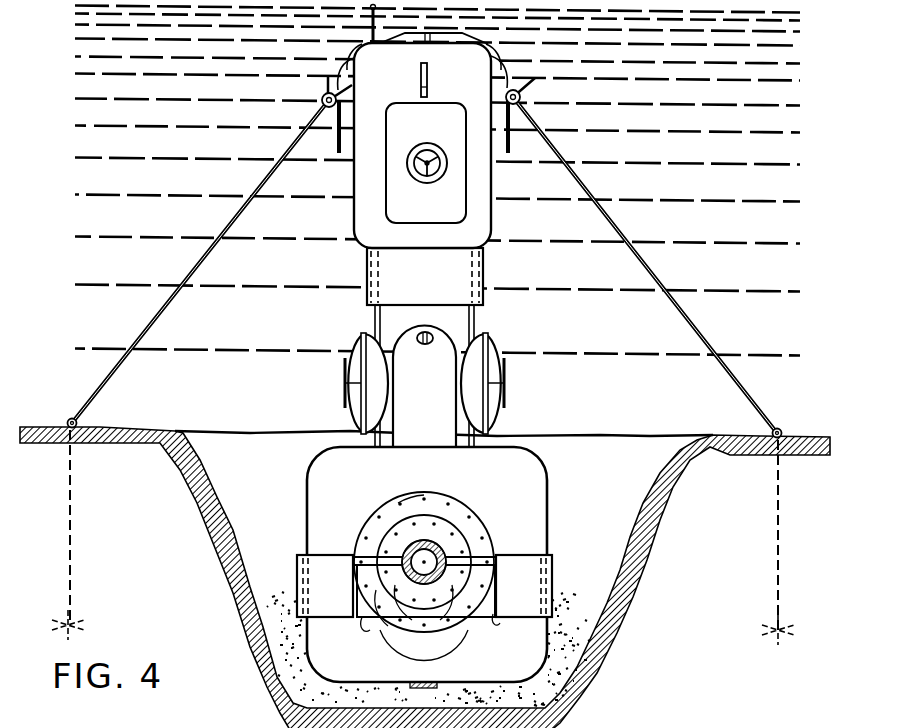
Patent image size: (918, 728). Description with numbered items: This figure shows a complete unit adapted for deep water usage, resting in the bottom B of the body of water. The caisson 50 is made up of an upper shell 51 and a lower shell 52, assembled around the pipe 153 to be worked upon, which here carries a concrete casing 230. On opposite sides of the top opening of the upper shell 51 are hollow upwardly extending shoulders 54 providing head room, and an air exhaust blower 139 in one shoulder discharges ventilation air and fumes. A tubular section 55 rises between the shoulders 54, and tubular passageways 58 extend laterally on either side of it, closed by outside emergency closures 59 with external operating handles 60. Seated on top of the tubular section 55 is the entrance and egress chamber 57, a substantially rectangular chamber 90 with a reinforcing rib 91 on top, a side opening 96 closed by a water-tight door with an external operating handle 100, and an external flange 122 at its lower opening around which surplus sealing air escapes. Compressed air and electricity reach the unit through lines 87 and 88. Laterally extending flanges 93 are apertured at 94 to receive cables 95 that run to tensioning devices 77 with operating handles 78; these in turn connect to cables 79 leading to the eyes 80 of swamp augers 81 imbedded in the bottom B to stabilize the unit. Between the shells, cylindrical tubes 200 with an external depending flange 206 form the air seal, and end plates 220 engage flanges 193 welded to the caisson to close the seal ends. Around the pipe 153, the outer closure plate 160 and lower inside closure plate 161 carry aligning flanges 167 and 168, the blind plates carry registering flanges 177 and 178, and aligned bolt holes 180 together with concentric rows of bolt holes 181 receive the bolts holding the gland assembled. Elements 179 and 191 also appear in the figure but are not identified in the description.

The caisson 50 is at (418, 564).
The upper shell 51 is at (307, 498).
The lower shell 52 is at (311, 640).
The hollow upwardly extending shoulders 54 is at (453, 373).
The tubular section 55 is at (375, 316).
The entrance and egress chamber 57 is at (421, 127).
The tubular passageways 58 is at (426, 373).
The outside emergency closures 59 is at (360, 350).
The external operating handles 60 is at (343, 380).
The tensioning devices 77 is at (334, 108).
The operating handles 78 is at (323, 92).
The cables 79 is at (195, 276).
The eyes 80 is at (70, 420).
The swamp augers 81 is at (68, 520).
The compressed air line 87 is at (376, 25).
The electricity line 88 is at (416, 33).
The rectangular chamber 90 is at (492, 190).
The reinforcing rib 91 is at (432, 36).
The laterally extending flanges 93 is at (347, 70).
The apertures 94 is at (339, 76).
The cables 95 is at (328, 80).
The side opening 96 is at (455, 103).
The external operating handle 100 is at (426, 143).
The external flange 122 is at (484, 270).
The air exhaust blower 139 is at (430, 344).
The pipe 153 is at (427, 539).
The outer closure plate 160 is at (380, 533).
The lower inside closure plate 161 is at (452, 615).
The aligning flange 167 is at (370, 552).
The aligning flange 168 is at (371, 617).
The registering flange 177 is at (458, 535).
The registering flange 178 is at (430, 600).
The lower arc member 179 is at (424, 649).
The aligned bolt holes 180 is at (410, 525).
The concentric rows of bolt holes 181 is at (410, 503).
The hooks 191 is at (426, 632).
The flanges 193 is at (362, 612).
The cylindrical tubes 200 is at (425, 565).
The external depending flange 206 is at (297, 583).
The end plates 220 is at (362, 578).
The concrete casing 230 is at (442, 540).
The bottom B is at (140, 428).